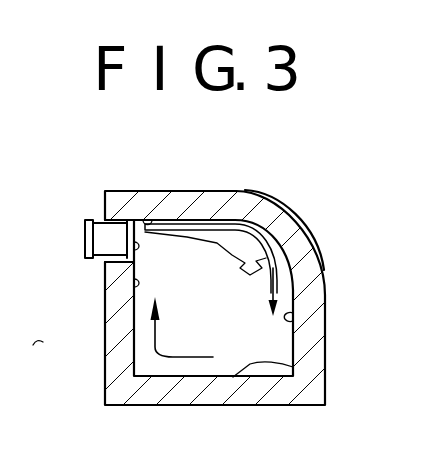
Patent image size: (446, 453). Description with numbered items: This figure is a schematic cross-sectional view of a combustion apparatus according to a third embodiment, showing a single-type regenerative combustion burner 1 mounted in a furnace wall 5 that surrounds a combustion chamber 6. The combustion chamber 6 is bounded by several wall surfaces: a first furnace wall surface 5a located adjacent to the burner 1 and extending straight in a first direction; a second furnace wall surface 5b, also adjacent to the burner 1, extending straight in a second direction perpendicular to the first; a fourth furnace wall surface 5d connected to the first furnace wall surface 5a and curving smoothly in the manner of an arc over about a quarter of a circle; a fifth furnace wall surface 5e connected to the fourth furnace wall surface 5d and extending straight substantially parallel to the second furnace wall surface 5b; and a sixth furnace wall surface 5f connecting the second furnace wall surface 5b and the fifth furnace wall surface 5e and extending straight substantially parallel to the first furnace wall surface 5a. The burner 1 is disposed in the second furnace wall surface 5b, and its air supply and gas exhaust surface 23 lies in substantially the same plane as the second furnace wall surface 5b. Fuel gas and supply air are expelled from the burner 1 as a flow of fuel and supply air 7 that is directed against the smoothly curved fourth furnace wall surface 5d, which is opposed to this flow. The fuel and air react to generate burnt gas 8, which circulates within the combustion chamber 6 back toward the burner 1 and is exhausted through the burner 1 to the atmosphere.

The single-type regenerative combustion burner 1 is at (103, 232).
The furnace wall 5 is at (295, 247).
The first furnace wall surface 5a is at (146, 225).
The second furnace wall surface 5b is at (134, 285).
The fourth furnace wall surface 5d is at (265, 202).
The fifth furnace wall surface 5e is at (295, 317).
The sixth furnace wall surface 5f is at (293, 367).
The combustion chamber 6 is at (267, 337).
The flow of the fuel and supply air 7 is at (180, 227).
The burnt gas 8 is at (153, 323).
The air supply and gas exhaust surface 23 is at (135, 245).